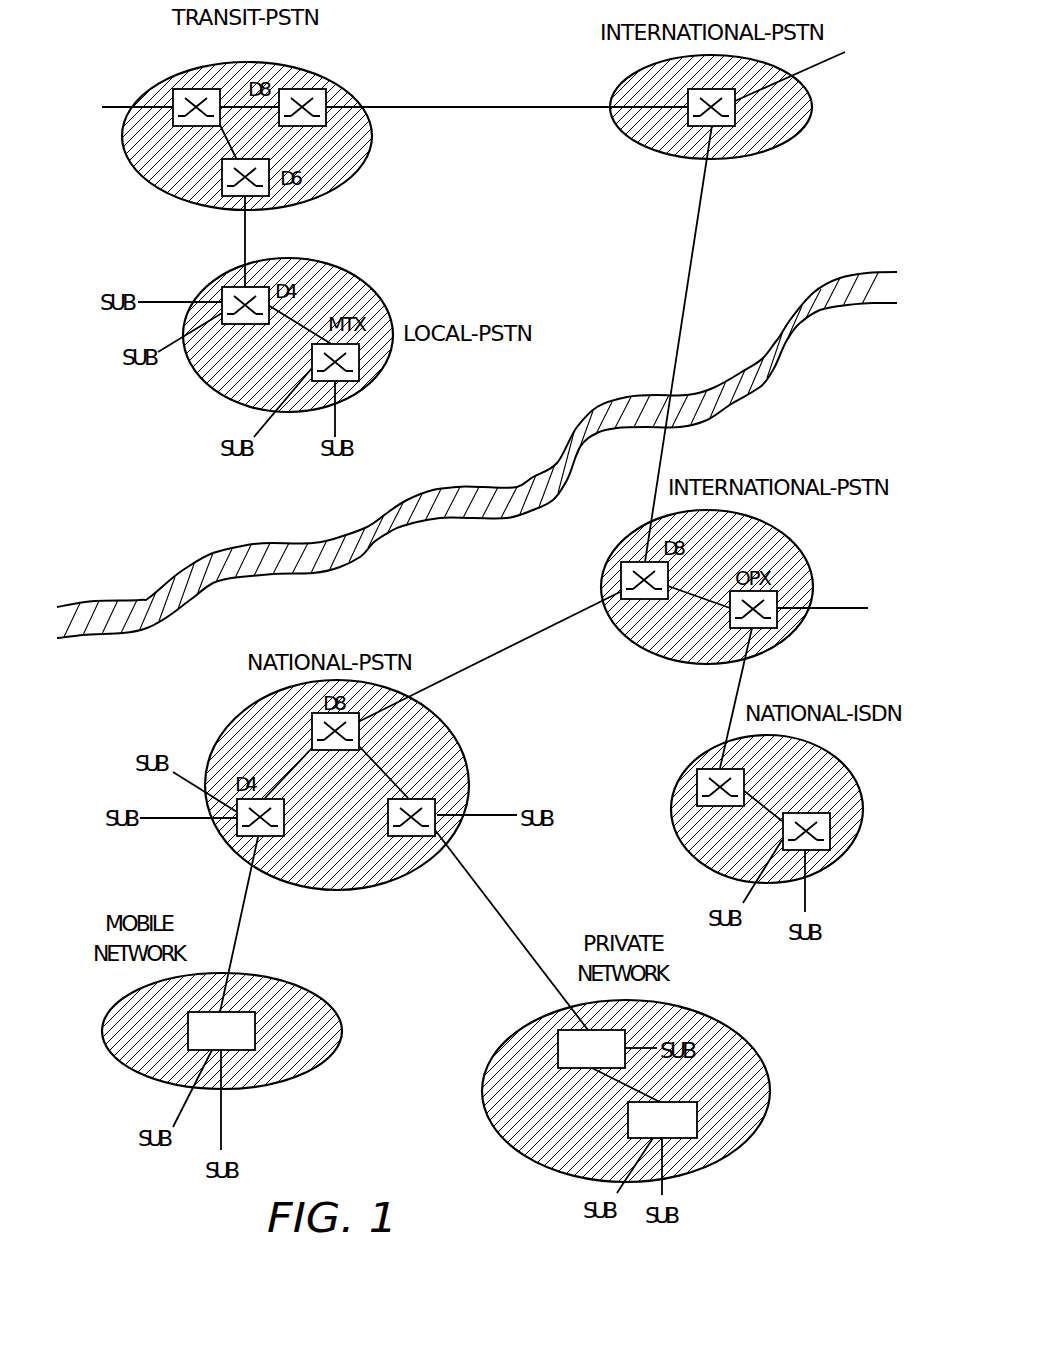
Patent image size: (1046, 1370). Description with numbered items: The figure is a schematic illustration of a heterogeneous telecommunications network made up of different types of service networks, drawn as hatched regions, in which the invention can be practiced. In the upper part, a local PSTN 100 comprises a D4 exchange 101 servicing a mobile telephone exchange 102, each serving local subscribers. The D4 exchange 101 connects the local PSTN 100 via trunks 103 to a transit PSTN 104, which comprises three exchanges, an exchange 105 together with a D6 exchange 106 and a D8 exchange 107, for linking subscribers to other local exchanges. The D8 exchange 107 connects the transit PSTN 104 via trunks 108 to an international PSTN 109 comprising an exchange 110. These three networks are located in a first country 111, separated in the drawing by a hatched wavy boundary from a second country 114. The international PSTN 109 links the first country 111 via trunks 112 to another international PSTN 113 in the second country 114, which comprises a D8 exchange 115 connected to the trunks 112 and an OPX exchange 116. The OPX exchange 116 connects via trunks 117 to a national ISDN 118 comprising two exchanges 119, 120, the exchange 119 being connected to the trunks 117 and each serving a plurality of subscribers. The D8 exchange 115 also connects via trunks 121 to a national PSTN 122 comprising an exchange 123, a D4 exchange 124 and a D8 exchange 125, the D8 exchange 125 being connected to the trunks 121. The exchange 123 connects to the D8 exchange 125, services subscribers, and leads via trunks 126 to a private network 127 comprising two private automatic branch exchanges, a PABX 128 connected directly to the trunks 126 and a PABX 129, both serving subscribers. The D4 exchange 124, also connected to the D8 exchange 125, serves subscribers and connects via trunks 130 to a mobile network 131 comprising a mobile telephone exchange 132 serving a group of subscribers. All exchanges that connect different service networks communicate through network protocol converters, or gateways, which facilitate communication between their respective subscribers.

The local PSTN 100 is at (352, 267).
The D4 exchange 101 is at (222, 288).
The mobile telephone exchange 102 is at (358, 378).
The trunks 103 is at (247, 245).
The transit PSTN 104 is at (118, 136).
The exchange 105 is at (175, 88).
The D6 exchange 106 is at (222, 190).
The D8 exchange 107 is at (327, 88).
The trunks 108 is at (487, 105).
The international PSTN 109 is at (812, 108).
The exchange 110 is at (733, 126).
The first country 111 is at (794, 265).
The trunks 112 is at (688, 266).
The international PSTN 113 is at (803, 566).
The second country 114 is at (854, 400).
The D8 exchange 115 is at (620, 563).
The OPX exchange 116 is at (777, 625).
The trunks 117 is at (737, 692).
The national ISDN 118 is at (860, 787).
The exchange 119 is at (697, 770).
The exchange 120 is at (830, 845).
The trunks 121 is at (505, 648).
The national PSTN 122 is at (458, 740).
The exchange 123 is at (415, 838).
The D4 exchange 124 is at (237, 832).
The D8 exchange 125 is at (312, 718).
The trunks 126 is at (500, 907).
The private network 127 is at (750, 1047).
The PABX 128 is at (558, 1035).
The PABX 129 is at (692, 1130).
The trunks 130 is at (243, 921).
The mobile network 131 is at (323, 997).
The mobile telephone exchange 132 is at (253, 1043).